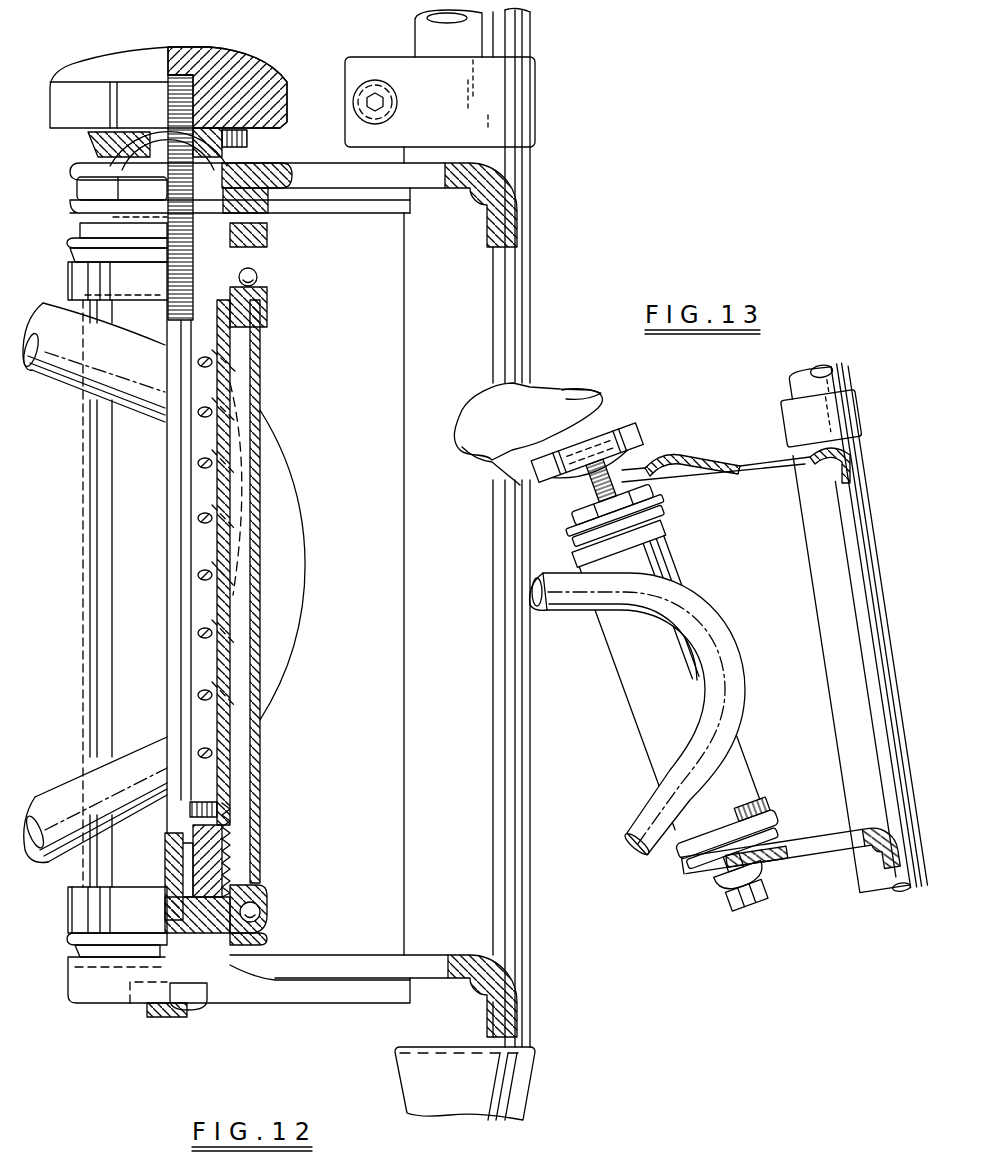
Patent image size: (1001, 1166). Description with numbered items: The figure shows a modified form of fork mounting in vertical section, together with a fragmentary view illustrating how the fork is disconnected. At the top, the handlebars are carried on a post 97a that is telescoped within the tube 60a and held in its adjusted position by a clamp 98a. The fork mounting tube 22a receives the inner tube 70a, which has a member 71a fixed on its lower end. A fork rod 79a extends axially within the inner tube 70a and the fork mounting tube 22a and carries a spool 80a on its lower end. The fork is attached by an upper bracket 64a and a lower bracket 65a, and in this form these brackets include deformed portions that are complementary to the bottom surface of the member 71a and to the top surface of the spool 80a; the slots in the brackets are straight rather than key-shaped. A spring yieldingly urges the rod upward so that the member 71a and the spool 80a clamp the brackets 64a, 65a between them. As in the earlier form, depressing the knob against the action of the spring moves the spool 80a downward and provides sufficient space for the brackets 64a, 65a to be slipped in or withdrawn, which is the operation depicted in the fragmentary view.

In FIG. 12, the post 97a is at (512, 36).
In FIG. 13, the post 97a is at (792, 385).
In FIG. 12, the clamp 98a is at (527, 120).
In FIG. 13, the clamp 98a is at (770, 423).
In FIG. 12, the upper fork bracket 64a is at (352, 175).
In FIG. 13, the upper fork bracket 64a is at (758, 462).
In FIG. 12, the tube 60a is at (518, 305).
In FIG. 13, the tube 60a is at (840, 716).
In FIG. 12, the fork rod 79a is at (178, 605).
In FIG. 12, the fork mounting tube 22a is at (262, 764).
In FIG. 13, the fork mounting tube 22a is at (680, 572).
In FIG. 12, the inner tube 70a is at (222, 818).
In FIG. 12, the member 71a is at (262, 920).
In FIG. 13, the member 71a is at (755, 832).
In FIG. 12, the spool 80a is at (222, 978).
In FIG. 13, the spool 80a is at (720, 880).
In FIG. 12, the lower fork bracket 65a is at (352, 965).
In FIG. 13, the lower fork bracket 65a is at (823, 845).